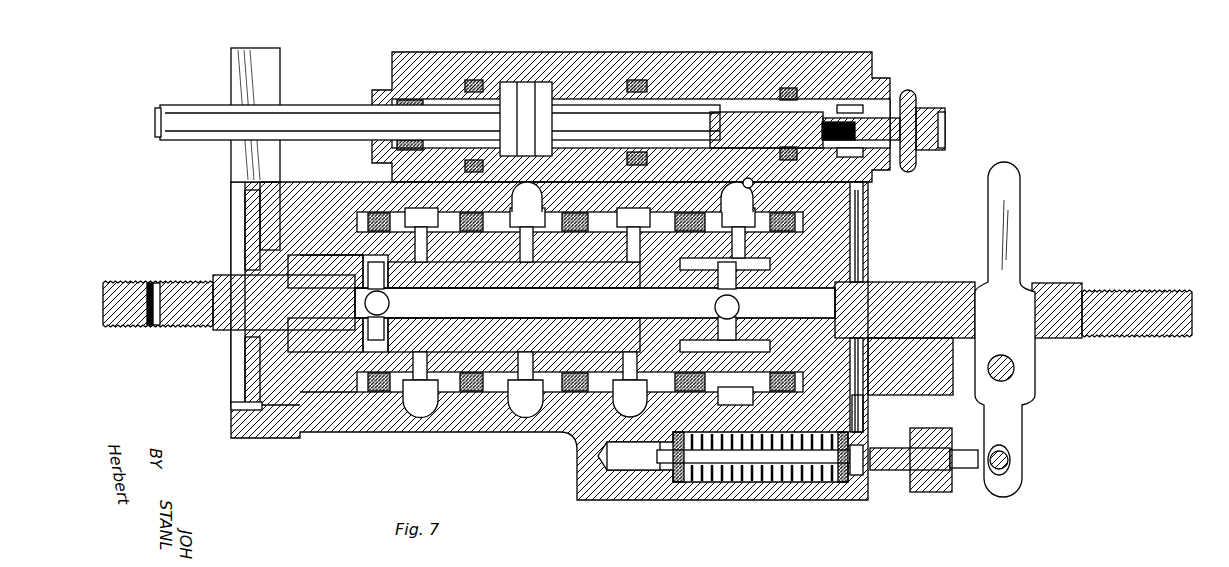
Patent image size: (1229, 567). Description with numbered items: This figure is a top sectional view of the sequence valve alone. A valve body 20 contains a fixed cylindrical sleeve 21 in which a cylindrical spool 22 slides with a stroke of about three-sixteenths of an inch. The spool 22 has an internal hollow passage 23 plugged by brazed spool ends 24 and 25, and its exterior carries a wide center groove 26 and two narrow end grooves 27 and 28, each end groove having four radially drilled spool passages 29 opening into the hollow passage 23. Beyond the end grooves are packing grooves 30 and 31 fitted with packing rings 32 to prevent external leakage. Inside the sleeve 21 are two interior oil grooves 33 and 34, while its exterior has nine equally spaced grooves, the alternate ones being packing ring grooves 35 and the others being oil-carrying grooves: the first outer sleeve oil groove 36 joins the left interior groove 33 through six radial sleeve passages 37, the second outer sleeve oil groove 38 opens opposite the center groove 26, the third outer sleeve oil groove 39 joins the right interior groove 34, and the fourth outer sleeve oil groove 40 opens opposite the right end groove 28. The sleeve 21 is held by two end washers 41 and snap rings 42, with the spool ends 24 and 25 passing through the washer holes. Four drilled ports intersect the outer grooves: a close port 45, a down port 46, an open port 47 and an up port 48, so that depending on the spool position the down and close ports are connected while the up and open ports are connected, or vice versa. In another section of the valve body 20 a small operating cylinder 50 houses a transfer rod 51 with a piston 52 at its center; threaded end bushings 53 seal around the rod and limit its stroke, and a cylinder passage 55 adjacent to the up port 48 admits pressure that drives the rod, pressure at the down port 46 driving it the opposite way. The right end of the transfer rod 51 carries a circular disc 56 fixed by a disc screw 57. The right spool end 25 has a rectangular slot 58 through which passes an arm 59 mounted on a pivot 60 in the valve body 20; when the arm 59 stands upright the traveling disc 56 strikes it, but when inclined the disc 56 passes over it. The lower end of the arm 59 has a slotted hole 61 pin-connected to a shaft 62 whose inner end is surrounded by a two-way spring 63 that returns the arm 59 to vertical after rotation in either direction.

The valve body 20 is at (577, 495).
The fixed cylindrical sleeve 21 is at (350, 437).
The cylindrical spool 22 is at (268, 440).
The internal hollow passage 23 is at (595, 303).
The spool end 24 is at (213, 332).
The spool end 25 is at (922, 285).
The center groove 26 is at (548, 430).
The end groove 27 is at (357, 360).
The end groove 28 is at (735, 396).
The spool passages 29 is at (389, 303).
The packing groove 30 is at (280, 263).
The packing groove 31 is at (860, 265).
The packing rings 32 is at (280, 235).
The interior sleeve groove 33 is at (363, 243).
The interior sleeve groove 34 is at (520, 186).
The packing ring grooves 35 is at (357, 185).
The first outer sleeve oil groove 36 is at (421, 235).
The sleeve passages 37 is at (503, 367).
The second outer sleeve oil groove 38 is at (527, 235).
The third outer sleeve oil groove 39 is at (633, 235).
The fourth outer sleeve oil groove 40 is at (738, 233).
The end washers 41 is at (253, 362).
The snap rings 42 is at (233, 400).
The close port 45 is at (420, 417).
The down port 46 is at (512, 196).
The open port 47 is at (728, 456).
The up port 48 is at (727, 198).
The operating cylinder 50 is at (597, 107).
The transfer rod 51 is at (300, 110).
The piston 52 is at (545, 90).
The threaded end bushings 53 is at (386, 78).
The cylinder passage 55 is at (748, 179).
The circular disc 56 is at (920, 96).
The disc screw 57 is at (946, 116).
The rectangular slot 58 is at (1050, 290).
The arm 59 is at (1008, 182).
The pivot 60 is at (1016, 368).
The slotted hole 61 is at (1000, 478).
The shaft 62 is at (890, 472).
The two-way spring 63 is at (717, 470).